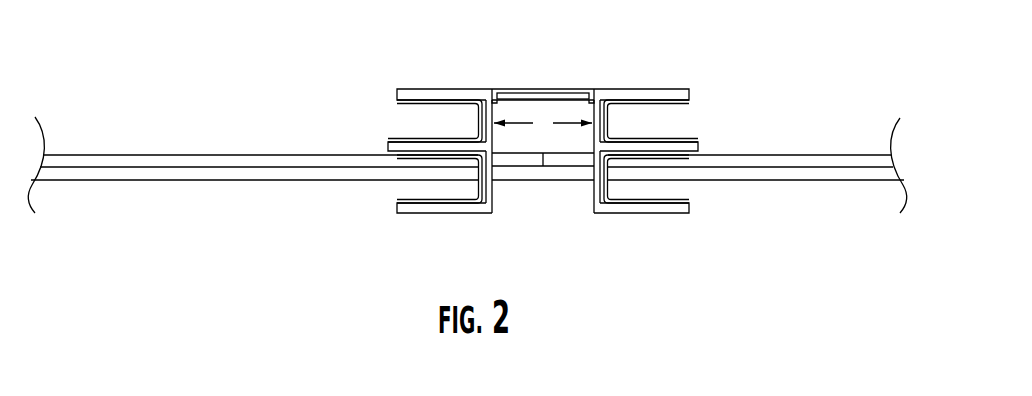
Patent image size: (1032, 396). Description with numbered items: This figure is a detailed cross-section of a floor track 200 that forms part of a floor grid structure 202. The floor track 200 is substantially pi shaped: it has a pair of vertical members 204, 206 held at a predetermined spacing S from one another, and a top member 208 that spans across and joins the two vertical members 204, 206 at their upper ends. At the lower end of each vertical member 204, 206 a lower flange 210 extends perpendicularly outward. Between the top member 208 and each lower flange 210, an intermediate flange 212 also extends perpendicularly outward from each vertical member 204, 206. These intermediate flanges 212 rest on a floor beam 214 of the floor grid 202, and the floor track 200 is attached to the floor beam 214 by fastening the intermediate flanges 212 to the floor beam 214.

The floor track 200 is at (550, 82).
The floor grid structure 202 is at (566, 140).
The vertical member 204 is at (594, 196).
The vertical member 206 is at (492, 196).
The top member 208 is at (442, 88).
The lower flange 210 is at (397, 208).
The intermediate flange 212 is at (402, 141).
The floor beam 214 is at (192, 155).